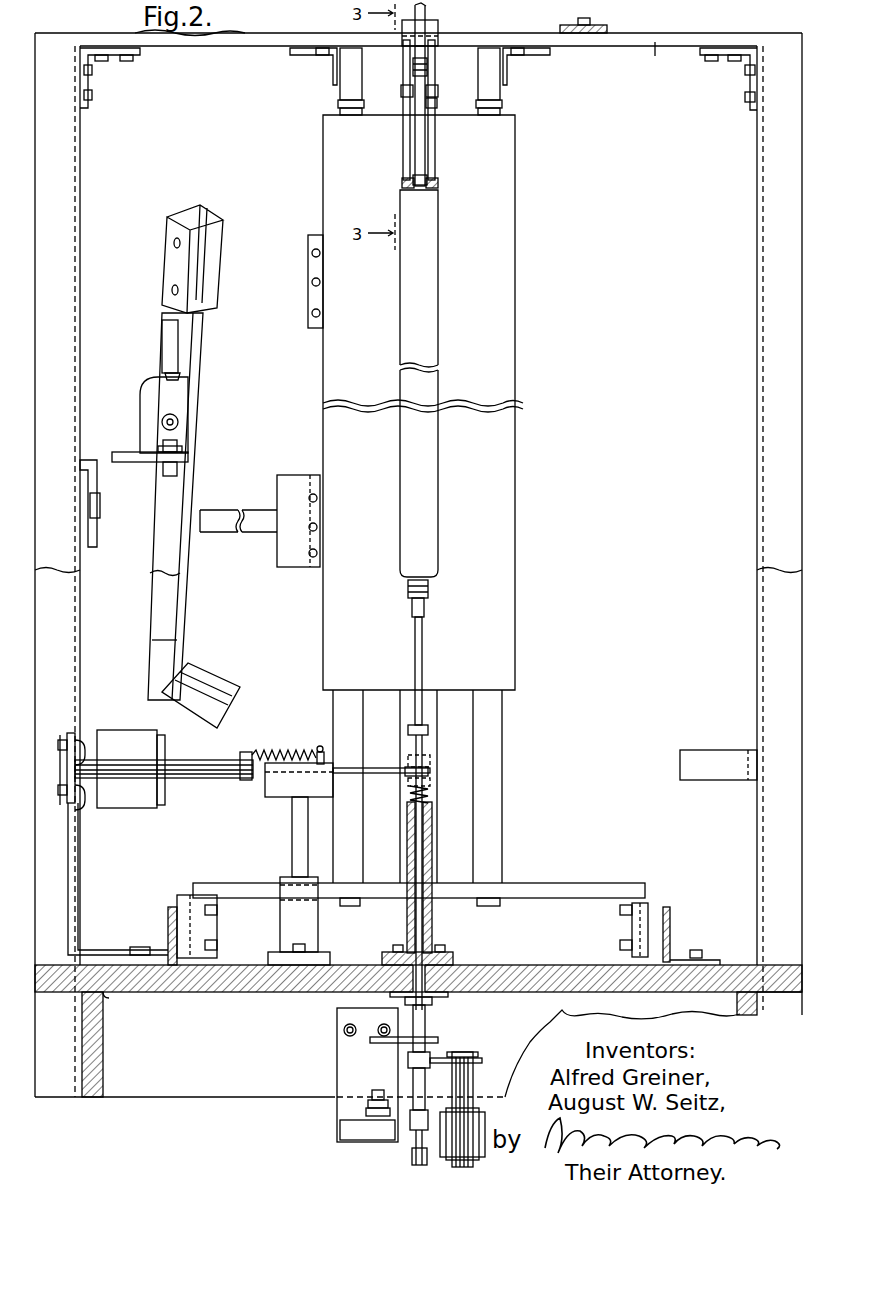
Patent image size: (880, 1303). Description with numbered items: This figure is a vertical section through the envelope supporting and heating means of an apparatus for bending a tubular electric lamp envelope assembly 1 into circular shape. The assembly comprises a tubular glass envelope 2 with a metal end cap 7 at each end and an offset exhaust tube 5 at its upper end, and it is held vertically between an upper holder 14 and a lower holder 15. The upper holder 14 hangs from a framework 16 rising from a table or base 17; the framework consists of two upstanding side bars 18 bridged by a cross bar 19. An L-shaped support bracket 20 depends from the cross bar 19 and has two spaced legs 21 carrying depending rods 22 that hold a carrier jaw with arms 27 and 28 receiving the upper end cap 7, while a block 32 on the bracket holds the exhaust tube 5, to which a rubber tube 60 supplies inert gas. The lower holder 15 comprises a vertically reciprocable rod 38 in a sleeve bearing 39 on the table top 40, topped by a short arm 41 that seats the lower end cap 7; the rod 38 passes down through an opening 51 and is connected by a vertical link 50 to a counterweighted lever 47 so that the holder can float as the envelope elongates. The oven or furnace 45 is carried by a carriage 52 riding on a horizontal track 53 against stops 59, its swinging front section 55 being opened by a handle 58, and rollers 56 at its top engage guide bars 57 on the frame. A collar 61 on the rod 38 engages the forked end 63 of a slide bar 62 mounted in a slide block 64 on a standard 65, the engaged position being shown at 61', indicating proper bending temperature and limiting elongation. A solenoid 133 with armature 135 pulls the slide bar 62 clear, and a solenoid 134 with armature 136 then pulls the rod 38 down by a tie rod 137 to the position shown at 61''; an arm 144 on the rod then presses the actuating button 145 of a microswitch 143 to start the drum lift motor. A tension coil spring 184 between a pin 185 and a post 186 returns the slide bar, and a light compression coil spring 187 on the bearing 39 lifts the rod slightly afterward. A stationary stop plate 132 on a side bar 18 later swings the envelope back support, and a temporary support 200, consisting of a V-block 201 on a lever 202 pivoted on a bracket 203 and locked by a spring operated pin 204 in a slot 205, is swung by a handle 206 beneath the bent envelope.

The tubular electric lamp envelope assembly 1 is at (445, 468).
The tubular glass envelope 2 is at (432, 530).
The exhaust tube 5 is at (425, 150).
The metal end cap 7 is at (427, 178).
The upper holder 14 is at (437, 103).
The lower holder 15 is at (428, 607).
The framework 16 is at (695, 30).
The table or base 17 is at (188, 1097).
The upstanding side bars or angle irons 18 is at (765, 288).
The cross bar 19 is at (654, 58).
The L-shaped support bracket 20 is at (440, 30).
The legs 21 is at (455, 90).
The depending rods 22 is at (455, 128).
The carrier jaw arm 27 is at (438, 186).
The carrier jaw arm 28 is at (402, 184).
The block 32 is at (428, 68).
The vertically reciprocable rod 38 is at (448, 1025).
The vertical sleeve bearing 39 is at (432, 915).
The table top 40 is at (538, 965).
The short arm 41 is at (408, 592).
The oven or furnace 45 is at (518, 250).
The counterweighted lever 47 is at (415, 1167).
The vertical link 50 is at (410, 1138).
The opening 51 is at (455, 960).
The carrier or carriage 52 is at (572, 883).
The horizontal track 53 is at (687, 915).
The swinging front section 55 is at (505, 302).
The rollers 56 is at (520, 92).
The guide bars 57 is at (522, 67).
The handle 58 is at (252, 527).
The stops 59 is at (632, 925).
The rubber tube 60 is at (427, 16).
The collar 61 is at (438, 727).
The collar (dotted-line position) 61' is at (440, 752).
The collar (lowered dotted-line position) 61'' is at (442, 788).
The limiting stop or slide bar 62 is at (378, 766).
The forked end 63 is at (428, 771).
The slide block 64 is at (275, 790).
The upstanding standard 65 is at (292, 845).
The stationary stop plate 132 is at (703, 752).
The solenoid 133 is at (143, 812).
The solenoid 134 is at (465, 1162).
The armature 135 is at (217, 780).
The armature 136 is at (473, 1078).
The tie rod 137 is at (455, 1058).
The microswitch 143 is at (355, 1142).
The arm 144 is at (385, 1043).
The actuating button 145 is at (376, 1088).
The tension coil spring 184 is at (272, 748).
The pin 185 is at (233, 755).
The post 186 is at (320, 746).
The light compression coil spring 187 is at (428, 800).
The temporary support 200 is at (205, 396).
The V-block 201 is at (235, 706).
The lever 202 is at (172, 612).
The bracket 203 is at (140, 393).
The spring operated pin 204 is at (165, 372).
The slot 205 is at (150, 424).
The handle 206 is at (168, 228).